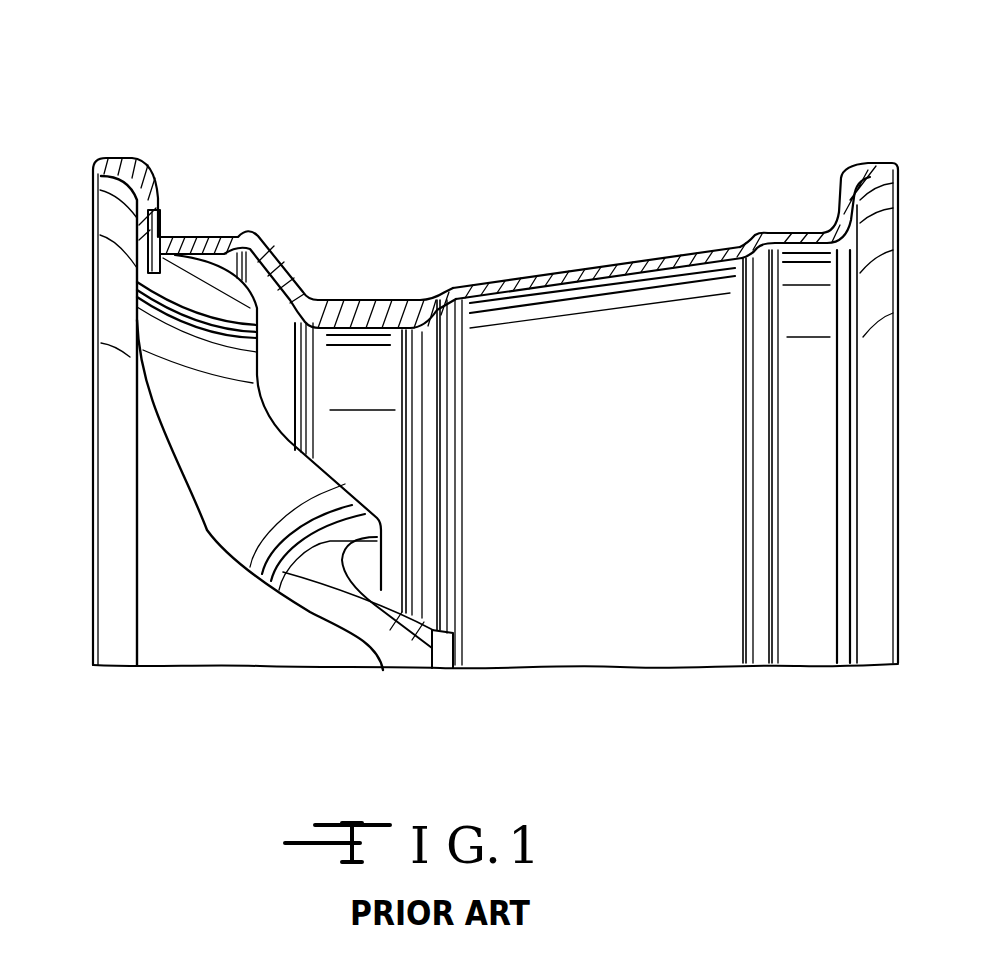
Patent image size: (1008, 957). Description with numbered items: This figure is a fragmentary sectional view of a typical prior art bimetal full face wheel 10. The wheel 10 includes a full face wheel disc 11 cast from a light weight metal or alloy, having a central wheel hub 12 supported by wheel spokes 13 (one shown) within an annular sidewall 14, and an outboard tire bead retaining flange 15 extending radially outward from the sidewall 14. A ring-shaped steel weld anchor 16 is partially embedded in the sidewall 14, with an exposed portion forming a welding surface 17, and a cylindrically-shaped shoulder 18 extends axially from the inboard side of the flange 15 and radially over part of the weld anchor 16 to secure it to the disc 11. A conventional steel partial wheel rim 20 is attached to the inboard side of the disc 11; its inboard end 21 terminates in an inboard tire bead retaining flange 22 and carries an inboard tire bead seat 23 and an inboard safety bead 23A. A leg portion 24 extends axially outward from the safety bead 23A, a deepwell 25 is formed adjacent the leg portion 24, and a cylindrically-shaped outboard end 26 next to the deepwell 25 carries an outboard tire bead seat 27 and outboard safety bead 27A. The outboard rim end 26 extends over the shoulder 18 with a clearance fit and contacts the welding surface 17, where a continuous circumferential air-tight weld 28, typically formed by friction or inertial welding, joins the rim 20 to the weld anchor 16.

The bimetal full face wheel 10 is at (420, 192).
The full face wheel disc 11 is at (88, 553).
The central wheel hub 12 is at (412, 628).
The wheel spoke 13 is at (287, 475).
The annular sidewall 14 is at (202, 303).
The outboard tire bead retaining flange 15 is at (137, 163).
The weld anchor 16 is at (148, 222).
The welding surface 17 is at (160, 212).
The shoulder 18 is at (137, 287).
The partial wheel rim 20 is at (530, 278).
The inboard end 21 is at (820, 519).
The inboard tire bead retaining flange 22 is at (848, 183).
The inboard tire bead seat 23 is at (792, 233).
The inboard safety bead 23A is at (752, 234).
The leg portion 24 is at (585, 275).
The deepwell 25 is at (355, 312).
The outboard end 26 is at (228, 237).
The outboard tire bead seat 27 is at (182, 237).
The outboard safety bead 27A is at (280, 236).
The weld 28 is at (172, 237).